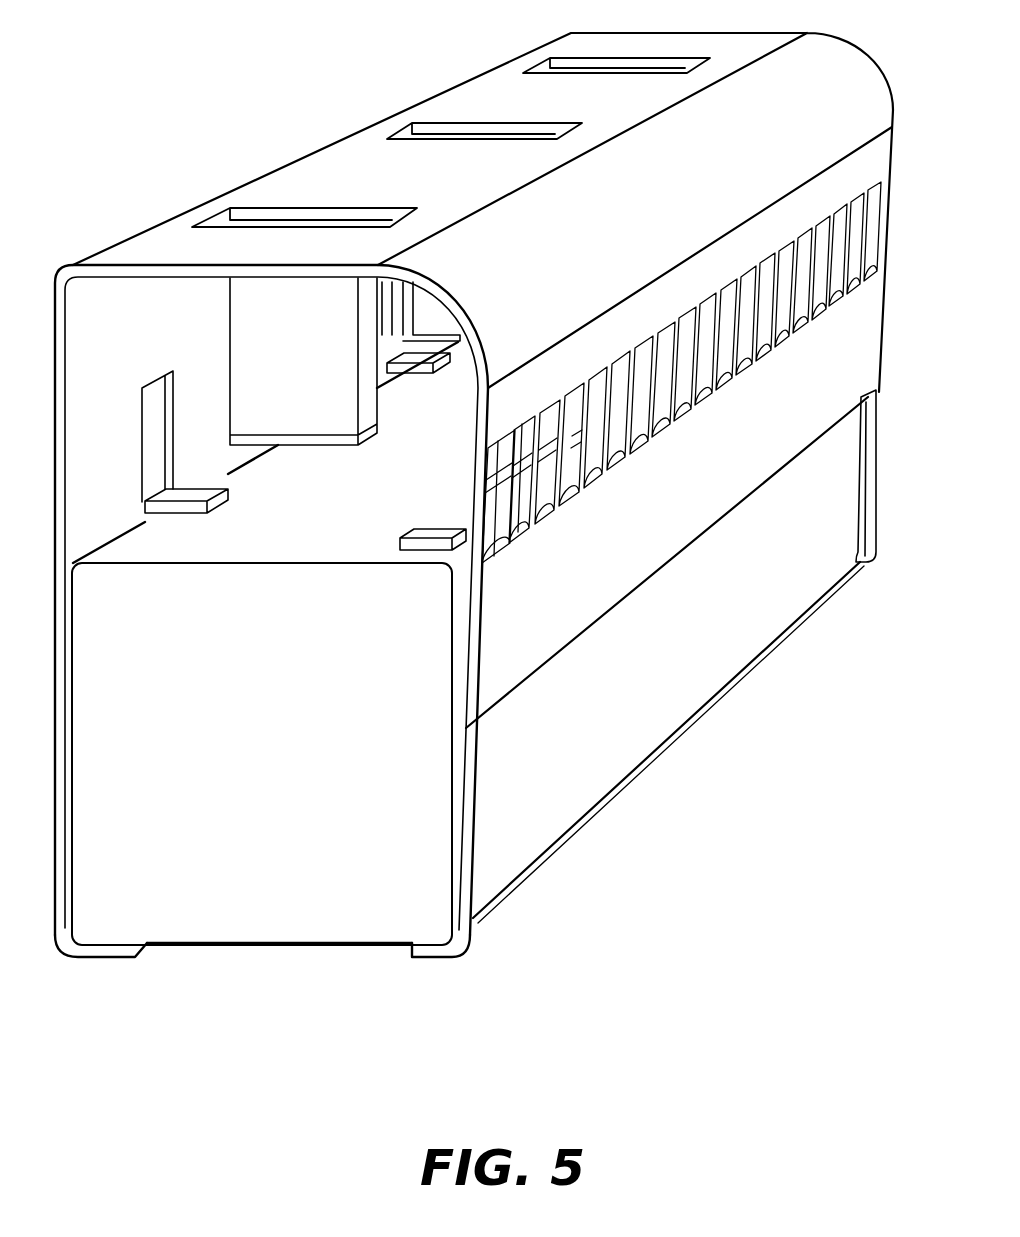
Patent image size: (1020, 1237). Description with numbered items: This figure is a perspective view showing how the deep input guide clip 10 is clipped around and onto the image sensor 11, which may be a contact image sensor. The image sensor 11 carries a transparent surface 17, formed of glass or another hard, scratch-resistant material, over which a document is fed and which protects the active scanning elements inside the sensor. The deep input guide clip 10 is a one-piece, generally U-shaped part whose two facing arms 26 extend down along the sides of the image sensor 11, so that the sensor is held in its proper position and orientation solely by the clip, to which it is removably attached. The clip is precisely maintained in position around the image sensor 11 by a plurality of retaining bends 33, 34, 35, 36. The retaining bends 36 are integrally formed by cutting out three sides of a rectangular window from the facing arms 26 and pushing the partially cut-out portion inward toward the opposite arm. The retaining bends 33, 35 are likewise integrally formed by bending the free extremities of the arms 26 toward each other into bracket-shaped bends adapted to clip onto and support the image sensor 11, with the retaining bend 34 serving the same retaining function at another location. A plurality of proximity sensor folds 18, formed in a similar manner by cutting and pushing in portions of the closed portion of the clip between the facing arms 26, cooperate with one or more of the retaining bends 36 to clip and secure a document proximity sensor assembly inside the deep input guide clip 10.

The deep input guide clip 10 is at (322, 177).
The image sensor 11 is at (230, 895).
The transparent surface 17 is at (720, 650).
The proximity sensor folds 18 is at (440, 320).
The facing arms 26 is at (187, 400).
The retaining bend 33 is at (460, 960).
The retaining bend 34 is at (875, 560).
The retaining bend 35 is at (78, 960).
The retaining bends 36 is at (410, 363).